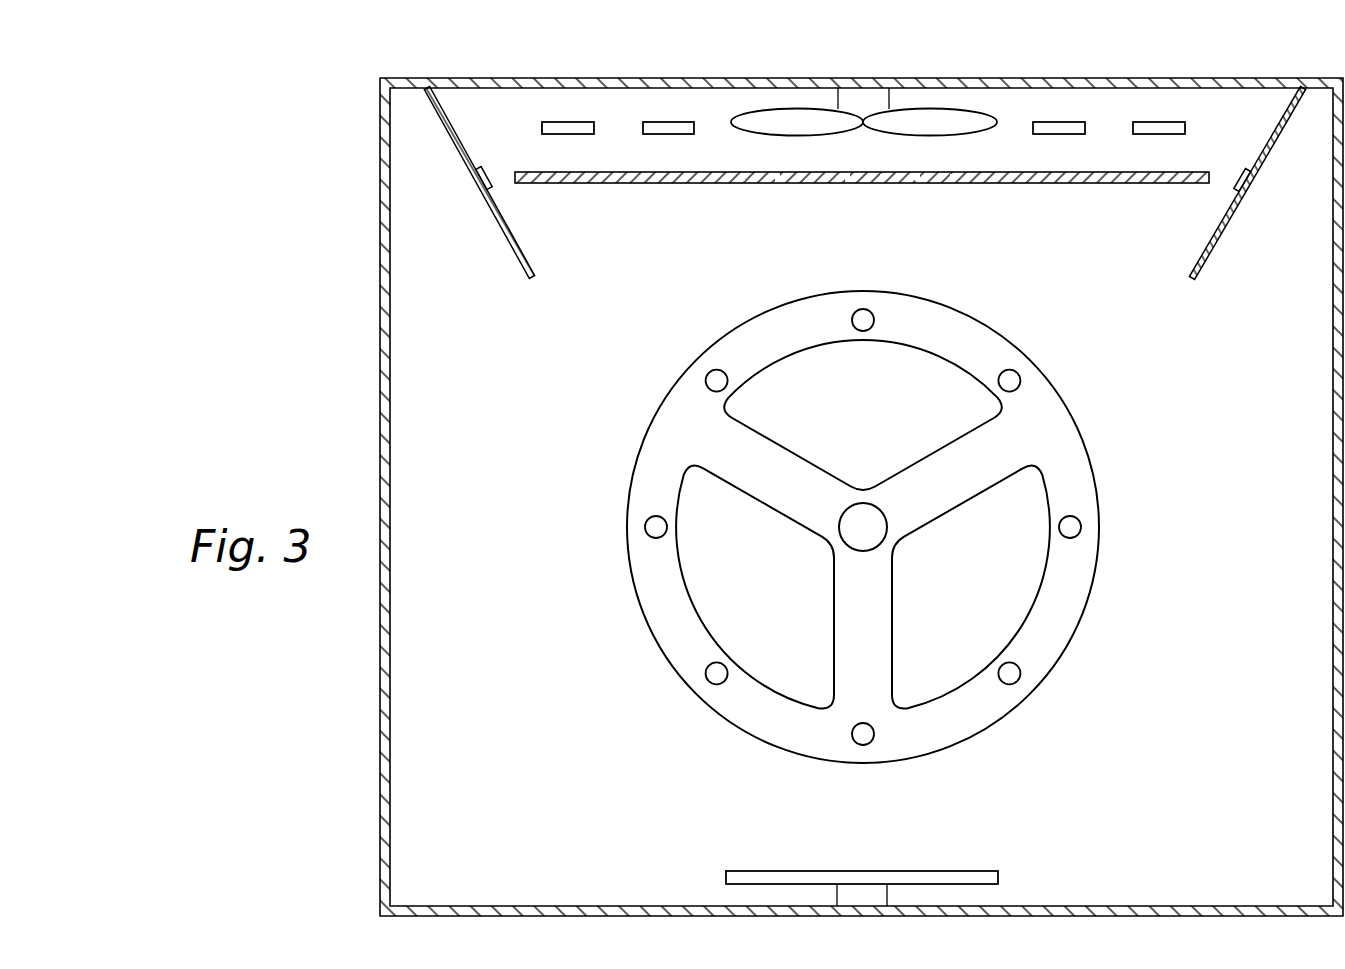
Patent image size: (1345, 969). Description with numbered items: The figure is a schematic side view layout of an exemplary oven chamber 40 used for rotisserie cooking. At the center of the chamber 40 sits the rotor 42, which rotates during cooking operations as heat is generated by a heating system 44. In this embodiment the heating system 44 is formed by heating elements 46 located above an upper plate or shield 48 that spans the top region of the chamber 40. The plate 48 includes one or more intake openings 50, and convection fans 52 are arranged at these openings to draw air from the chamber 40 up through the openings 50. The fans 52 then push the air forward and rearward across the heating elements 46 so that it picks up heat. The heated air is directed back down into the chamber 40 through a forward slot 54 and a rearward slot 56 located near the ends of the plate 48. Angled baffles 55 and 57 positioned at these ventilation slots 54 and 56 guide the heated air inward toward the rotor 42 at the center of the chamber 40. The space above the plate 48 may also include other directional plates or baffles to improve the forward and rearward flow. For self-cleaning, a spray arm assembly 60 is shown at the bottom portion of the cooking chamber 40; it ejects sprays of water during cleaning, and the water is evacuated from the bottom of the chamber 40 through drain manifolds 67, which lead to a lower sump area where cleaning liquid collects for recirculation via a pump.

The oven chamber 40 is at (1231, 435).
The rotor 42 is at (1070, 577).
The heating system 44 is at (670, 230).
The heating elements 46 is at (670, 126).
The upper plate 48 is at (706, 183).
The intake openings 50 is at (843, 183).
The convection fans 52 is at (918, 121).
The forward slot 54 is at (1222, 188).
The baffle 55 is at (512, 251).
The rearward slot 56 is at (512, 194).
The baffle 57 is at (1213, 250).
The spray arm assembly 60 is at (934, 862).
The drain manifolds 67 is at (640, 889).